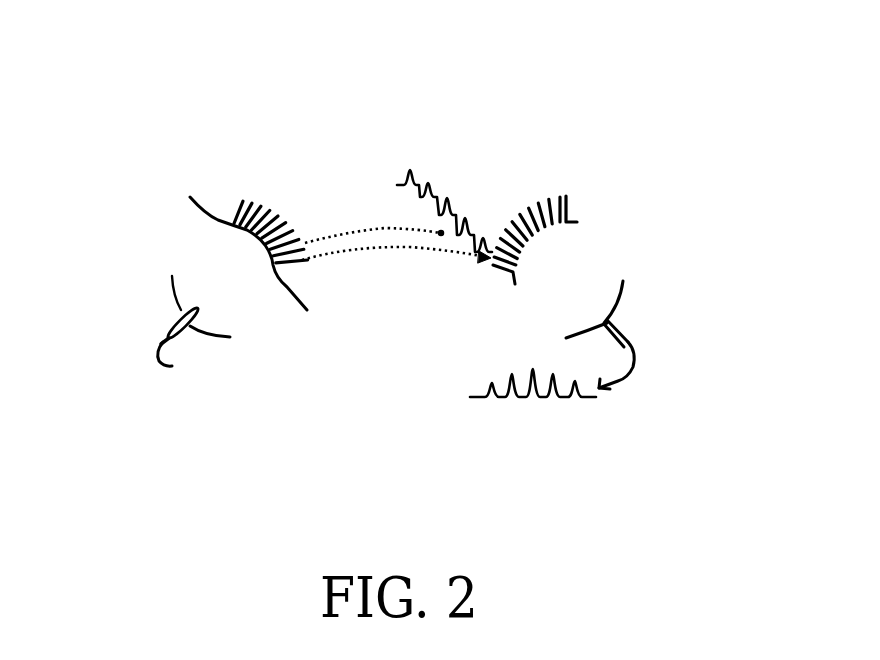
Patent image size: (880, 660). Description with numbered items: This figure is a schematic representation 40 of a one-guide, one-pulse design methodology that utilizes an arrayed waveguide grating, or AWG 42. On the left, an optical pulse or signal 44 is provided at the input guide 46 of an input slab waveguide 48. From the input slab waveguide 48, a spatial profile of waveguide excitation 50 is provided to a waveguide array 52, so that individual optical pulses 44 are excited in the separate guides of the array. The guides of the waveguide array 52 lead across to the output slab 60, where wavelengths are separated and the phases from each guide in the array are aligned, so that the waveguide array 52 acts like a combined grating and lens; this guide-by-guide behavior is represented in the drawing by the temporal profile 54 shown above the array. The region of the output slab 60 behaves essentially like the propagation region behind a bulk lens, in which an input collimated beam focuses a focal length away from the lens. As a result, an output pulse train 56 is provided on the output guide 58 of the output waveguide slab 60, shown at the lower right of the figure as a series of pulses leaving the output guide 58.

The schematic representation 40 is at (137, 112).
The AWG 42 is at (400, 353).
The optical pulse 44 is at (146, 381).
The input guide 46 is at (178, 315).
The input slab waveguide 48 is at (184, 288).
The spatial profile of waveguide excitation 50 is at (191, 223).
The waveguide array 52 is at (247, 167).
The temporal profile 54 is at (392, 157).
The output pulse train 56 is at (616, 407).
The output guide 58 is at (621, 325).
The output slab 60 is at (581, 267).